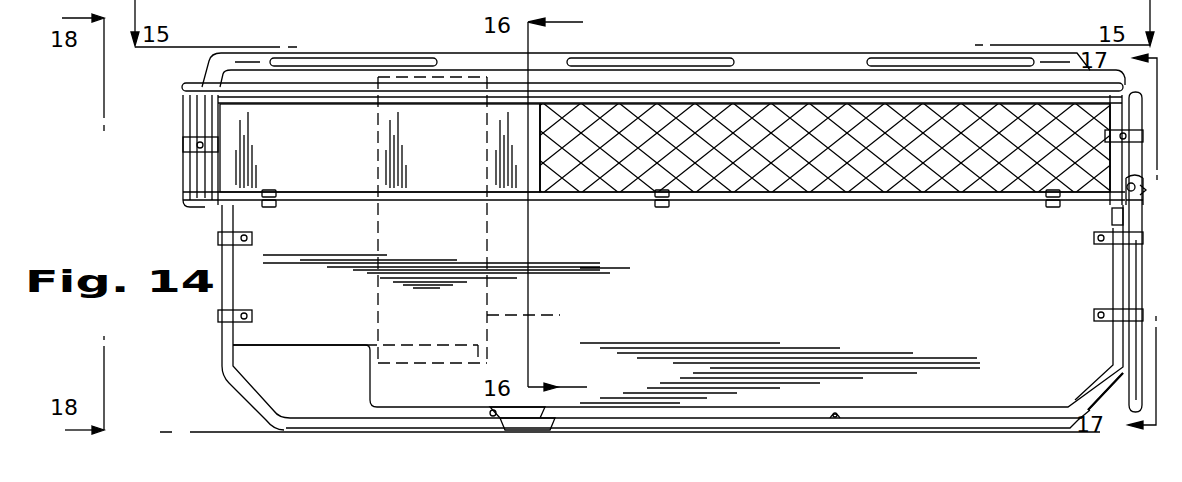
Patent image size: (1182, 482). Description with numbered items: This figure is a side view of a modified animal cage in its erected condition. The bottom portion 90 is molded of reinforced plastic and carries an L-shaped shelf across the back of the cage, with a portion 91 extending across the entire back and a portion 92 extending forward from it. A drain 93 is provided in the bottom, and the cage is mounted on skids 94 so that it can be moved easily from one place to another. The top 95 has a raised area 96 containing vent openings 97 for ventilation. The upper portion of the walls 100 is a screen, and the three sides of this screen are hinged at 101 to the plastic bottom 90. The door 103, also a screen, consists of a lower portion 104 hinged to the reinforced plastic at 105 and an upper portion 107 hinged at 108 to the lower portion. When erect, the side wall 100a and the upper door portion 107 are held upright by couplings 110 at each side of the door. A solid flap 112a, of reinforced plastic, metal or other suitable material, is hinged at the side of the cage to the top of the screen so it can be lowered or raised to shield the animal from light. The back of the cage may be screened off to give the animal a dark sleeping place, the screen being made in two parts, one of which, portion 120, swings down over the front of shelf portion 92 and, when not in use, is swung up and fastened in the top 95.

The bottom portion 90 is at (641, 318).
The shelf portion 91 is at (281, 345).
The shelf portion 92 is at (404, 345).
The drain 93 is at (536, 430).
The skids 94 is at (243, 398).
The top 95 is at (198, 66).
The raised area 96 is at (594, 53).
The vent openings 97 is at (369, 57).
The walls 100 is at (923, 186).
The side wall 100a is at (808, 184).
The hinges 101 is at (268, 208).
The door 103 is at (1118, 357).
The lower portion of door 104 is at (1138, 277).
The hinge 105 is at (1133, 242).
The upper portion of door 107 is at (1132, 165).
The hinge 108 is at (1125, 188).
The couplings 110 is at (184, 146).
The solid flap 112a is at (380, 148).
The screen portion 120 is at (544, 318).